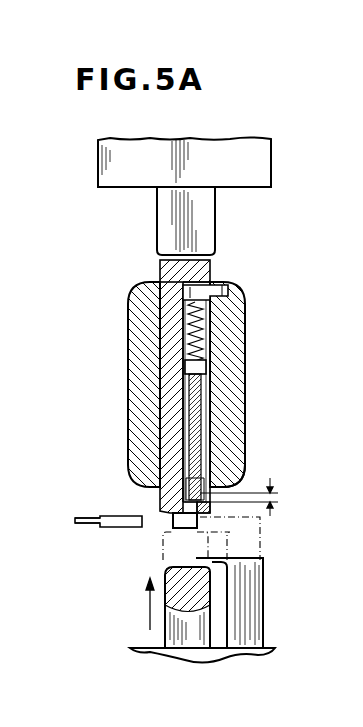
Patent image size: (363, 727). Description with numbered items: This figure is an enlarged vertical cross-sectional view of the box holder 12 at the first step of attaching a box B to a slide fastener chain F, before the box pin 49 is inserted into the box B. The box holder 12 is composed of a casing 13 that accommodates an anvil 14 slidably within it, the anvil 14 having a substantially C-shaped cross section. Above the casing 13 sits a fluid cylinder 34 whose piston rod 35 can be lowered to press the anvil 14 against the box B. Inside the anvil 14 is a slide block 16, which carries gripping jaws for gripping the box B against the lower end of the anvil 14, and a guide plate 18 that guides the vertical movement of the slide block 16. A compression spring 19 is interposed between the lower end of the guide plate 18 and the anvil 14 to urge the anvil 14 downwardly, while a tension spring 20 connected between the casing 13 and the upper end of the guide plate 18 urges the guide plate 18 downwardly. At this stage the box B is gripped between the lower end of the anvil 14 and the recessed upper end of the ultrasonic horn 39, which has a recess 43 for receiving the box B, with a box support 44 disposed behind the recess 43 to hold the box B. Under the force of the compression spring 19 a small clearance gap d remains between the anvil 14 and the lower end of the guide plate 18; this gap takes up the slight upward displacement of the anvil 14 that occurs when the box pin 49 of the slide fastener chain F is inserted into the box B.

The fluid cylinder 34 is at (256, 158).
The piston rod 35 is at (210, 223).
The anvil 14 is at (160, 262).
The casing 13 is at (135, 325).
The box holder 12 is at (126, 372).
The tension spring 20 is at (205, 313).
The guide plate 18 is at (205, 415).
The slide block 16 is at (186, 433).
The compression spring 19 is at (230, 481).
The clearance gap d is at (246, 497).
The box pin 49 is at (122, 515).
The slide fastener chain F is at (76, 519).
The box B is at (175, 520).
The recess 43 is at (165, 568).
The box support 44 is at (255, 590).
The ultrasonic horn 39 is at (172, 640).